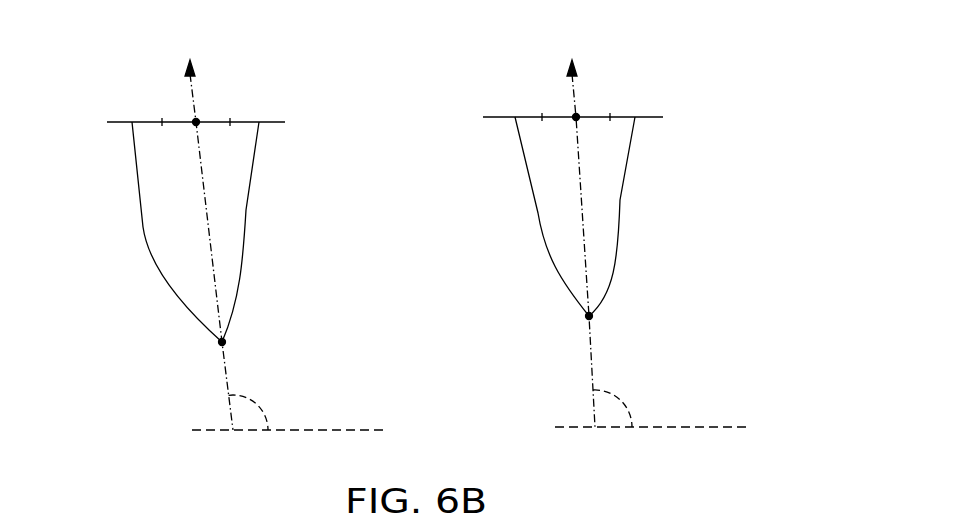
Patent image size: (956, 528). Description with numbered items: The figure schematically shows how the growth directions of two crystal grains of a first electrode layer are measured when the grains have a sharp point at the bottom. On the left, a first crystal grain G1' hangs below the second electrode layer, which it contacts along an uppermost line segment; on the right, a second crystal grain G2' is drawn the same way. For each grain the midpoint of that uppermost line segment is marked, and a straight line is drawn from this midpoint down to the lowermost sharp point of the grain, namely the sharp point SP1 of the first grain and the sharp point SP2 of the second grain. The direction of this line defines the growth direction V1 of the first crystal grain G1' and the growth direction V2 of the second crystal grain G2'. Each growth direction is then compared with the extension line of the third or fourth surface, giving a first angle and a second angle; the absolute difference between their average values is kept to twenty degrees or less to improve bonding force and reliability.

The growth direction of the first crystal grain V1 is at (203, 234).
The growth direction of the second crystal grain V2 is at (576, 233).
The first crystal grain G1' is at (163, 232).
The second crystal grain G2' is at (550, 216).
The lowermost sharp point of the first crystal grain SP1 is at (245, 345).
The lowermost sharp point of the second crystal grain SP2 is at (613, 320).